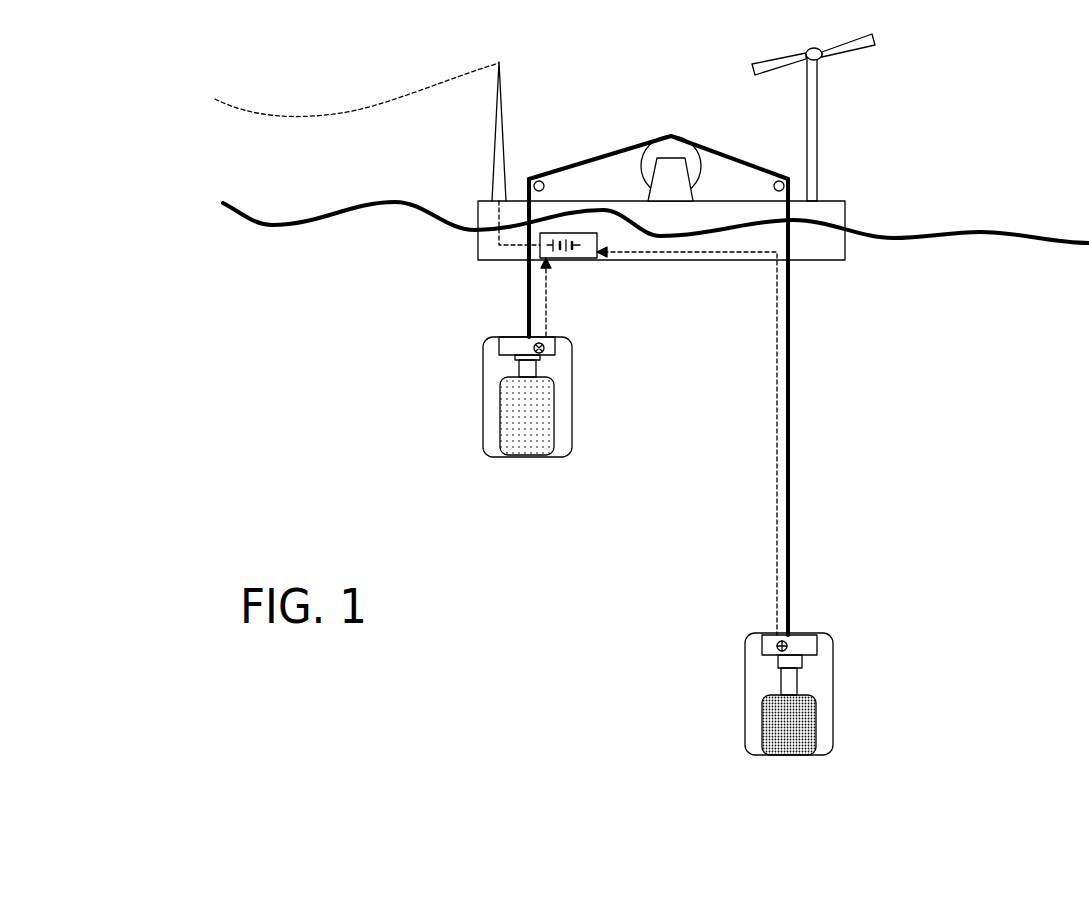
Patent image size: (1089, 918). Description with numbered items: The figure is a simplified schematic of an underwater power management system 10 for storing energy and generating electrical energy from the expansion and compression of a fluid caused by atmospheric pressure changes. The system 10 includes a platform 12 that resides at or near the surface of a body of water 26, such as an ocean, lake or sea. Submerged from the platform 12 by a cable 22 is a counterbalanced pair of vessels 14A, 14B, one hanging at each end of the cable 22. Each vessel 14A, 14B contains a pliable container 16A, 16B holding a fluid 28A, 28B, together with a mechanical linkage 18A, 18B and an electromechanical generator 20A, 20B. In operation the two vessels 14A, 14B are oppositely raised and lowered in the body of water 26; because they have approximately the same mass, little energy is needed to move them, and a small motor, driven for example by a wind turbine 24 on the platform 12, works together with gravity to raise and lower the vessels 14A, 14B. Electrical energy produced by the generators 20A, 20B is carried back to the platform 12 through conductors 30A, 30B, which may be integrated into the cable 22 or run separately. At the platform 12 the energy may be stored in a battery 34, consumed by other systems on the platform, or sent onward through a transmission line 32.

The underwater power management system 10 is at (896, 90).
The platform 12 is at (837, 209).
The vessel 14A is at (572, 398).
The vessel 14B is at (833, 695).
The pliable container 16A is at (500, 423).
The pliable container 16B is at (760, 728).
The mechanical linkage 18A is at (508, 367).
The mechanical linkage 18B is at (788, 680).
The electromechanical generator 20A is at (517, 347).
The electromechanical generator 20B is at (762, 647).
The cable 22 is at (733, 157).
The wind turbine 24 is at (773, 45).
The body of water 26 is at (935, 364).
The fluid 28A is at (528, 430).
The fluid 28B is at (798, 737).
The conductor 30A is at (547, 297).
The conductor 30B is at (776, 477).
The transmission line 32 is at (355, 110).
The battery 34 is at (588, 252).